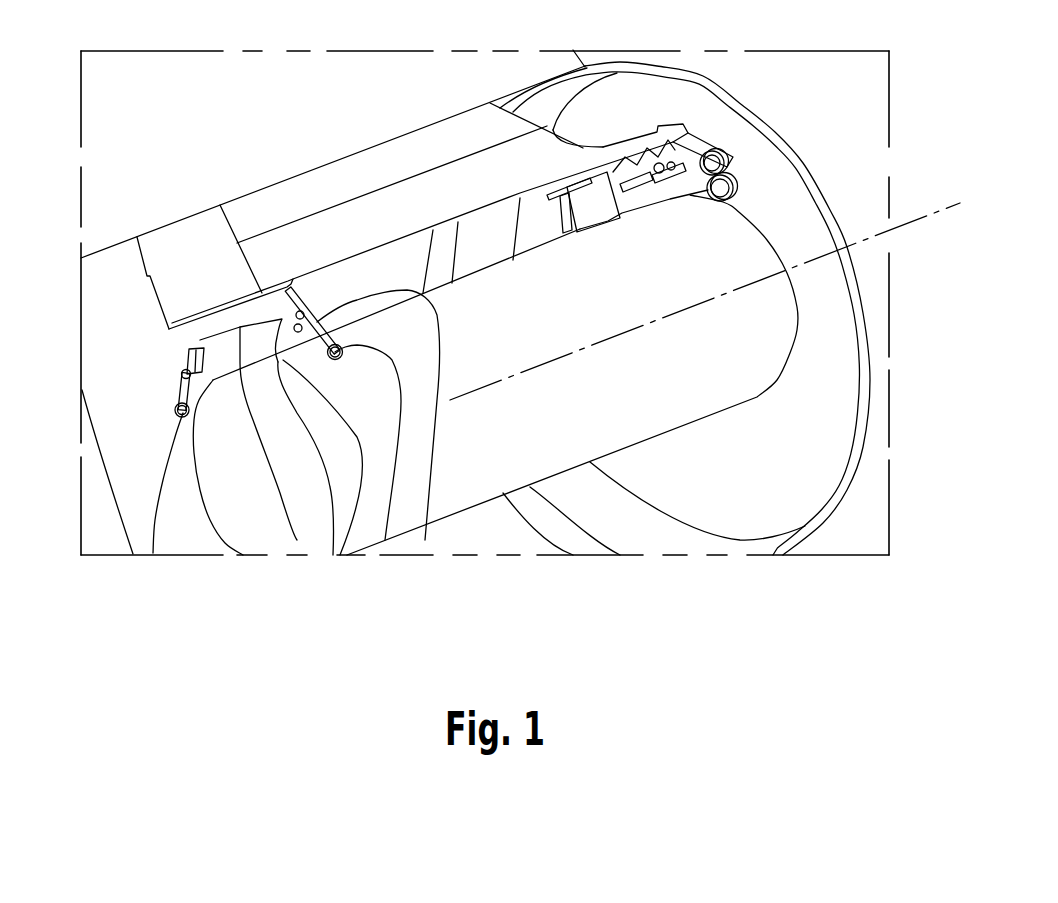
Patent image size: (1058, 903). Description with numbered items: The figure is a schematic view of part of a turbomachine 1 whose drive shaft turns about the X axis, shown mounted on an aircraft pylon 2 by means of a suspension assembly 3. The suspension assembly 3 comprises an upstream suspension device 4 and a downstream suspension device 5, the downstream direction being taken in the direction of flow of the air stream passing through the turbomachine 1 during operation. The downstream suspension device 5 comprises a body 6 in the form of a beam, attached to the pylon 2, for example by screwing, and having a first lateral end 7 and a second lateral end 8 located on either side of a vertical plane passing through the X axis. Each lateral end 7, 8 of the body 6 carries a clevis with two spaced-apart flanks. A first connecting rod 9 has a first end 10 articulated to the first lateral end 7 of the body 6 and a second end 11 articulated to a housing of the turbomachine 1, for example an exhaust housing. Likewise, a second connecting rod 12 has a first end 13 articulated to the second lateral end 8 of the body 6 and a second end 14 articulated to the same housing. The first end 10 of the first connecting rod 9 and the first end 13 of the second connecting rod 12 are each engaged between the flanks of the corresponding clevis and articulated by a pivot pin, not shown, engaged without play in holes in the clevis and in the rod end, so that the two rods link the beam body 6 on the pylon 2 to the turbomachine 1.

The turbomachine 1 is at (692, 582).
The aircraft pylon 2 is at (170, 250).
The suspension assembly 3 is at (122, 369).
The upstream suspension device 4 is at (720, 135).
The downstream suspension device 5 is at (331, 232).
The body 6 is at (297, 540).
The first lateral end 7 is at (178, 351).
The second lateral end 8 is at (290, 300).
The first connecting rod 9 is at (170, 389).
The first end of the first connecting rod 10 is at (218, 535).
The second end of the first connecting rod 11 is at (153, 553).
The second connecting rod 12 is at (425, 540).
The first end of the second connecting rod 13 is at (333, 555).
The second end of the second connecting rod 14 is at (385, 540).
The X axis X is at (923, 217).